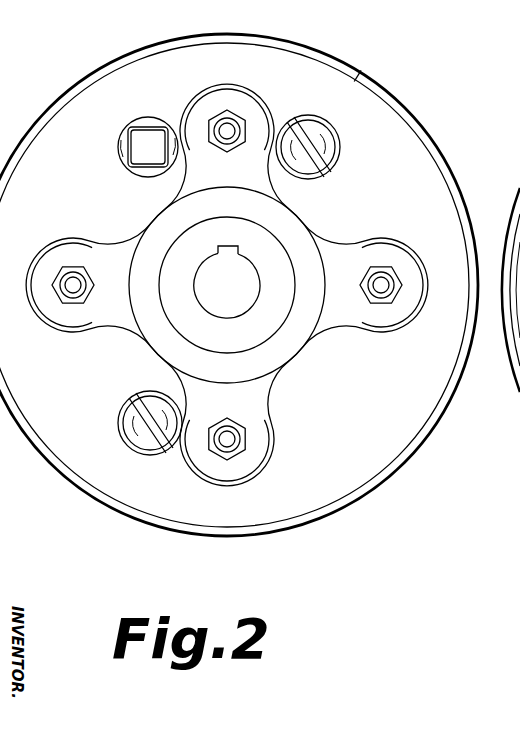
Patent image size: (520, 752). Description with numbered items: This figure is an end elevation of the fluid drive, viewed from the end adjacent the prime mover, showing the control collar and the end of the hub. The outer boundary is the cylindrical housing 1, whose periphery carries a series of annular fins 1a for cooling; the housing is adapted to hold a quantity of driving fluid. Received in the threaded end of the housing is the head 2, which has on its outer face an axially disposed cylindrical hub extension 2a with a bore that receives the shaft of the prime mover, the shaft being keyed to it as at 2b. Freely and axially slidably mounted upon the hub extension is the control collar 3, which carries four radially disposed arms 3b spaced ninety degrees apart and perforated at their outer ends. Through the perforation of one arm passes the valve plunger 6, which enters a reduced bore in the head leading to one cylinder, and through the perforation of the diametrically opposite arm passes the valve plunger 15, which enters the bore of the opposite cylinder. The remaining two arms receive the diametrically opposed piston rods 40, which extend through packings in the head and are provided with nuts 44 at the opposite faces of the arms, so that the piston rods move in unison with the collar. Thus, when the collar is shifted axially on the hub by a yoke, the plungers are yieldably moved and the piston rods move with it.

The cylindrical housing 1 is at (366, 72).
The annular fins 1a is at (414, 108).
The head 2 is at (291, 314).
The cylindrical hub extension 2a is at (262, 335).
The key 2b is at (245, 255).
The control collar 3 is at (255, 363).
The radially disposed arms 3b is at (247, 123).
The valve plunger 6 is at (229, 442).
The valve plunger 15 is at (231, 123).
The piston rods 40 is at (73, 285).
The nuts 44 is at (399, 275).